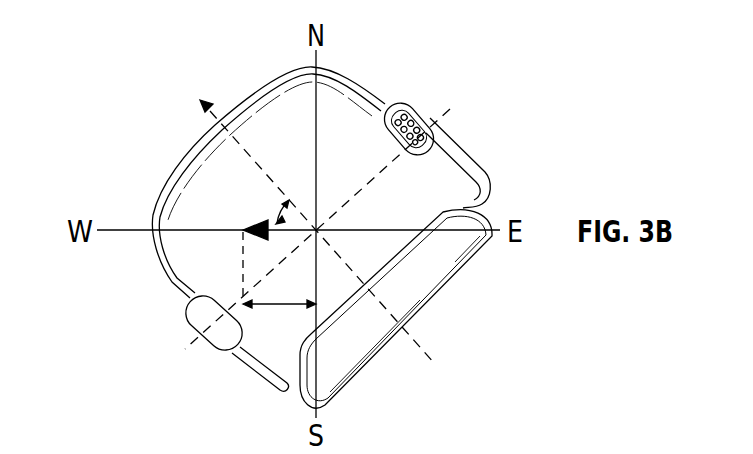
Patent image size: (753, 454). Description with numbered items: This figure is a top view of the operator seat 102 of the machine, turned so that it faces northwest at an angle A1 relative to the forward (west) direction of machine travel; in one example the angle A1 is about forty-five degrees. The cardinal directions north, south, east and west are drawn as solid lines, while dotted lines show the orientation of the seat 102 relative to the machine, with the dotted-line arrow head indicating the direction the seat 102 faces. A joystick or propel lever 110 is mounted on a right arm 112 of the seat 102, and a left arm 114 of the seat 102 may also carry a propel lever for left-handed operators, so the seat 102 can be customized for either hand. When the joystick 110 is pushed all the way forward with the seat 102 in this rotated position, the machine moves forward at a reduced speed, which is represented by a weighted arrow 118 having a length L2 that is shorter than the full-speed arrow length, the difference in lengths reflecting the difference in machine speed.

The operator seat 102 is at (297, 100).
The joystick or propel lever 110 is at (410, 104).
The right arm 112 is at (473, 174).
The left arm 114 is at (220, 352).
The weighted arrow 118 is at (300, 225).
The angle A1 is at (274, 202).
The length L2 is at (288, 307).